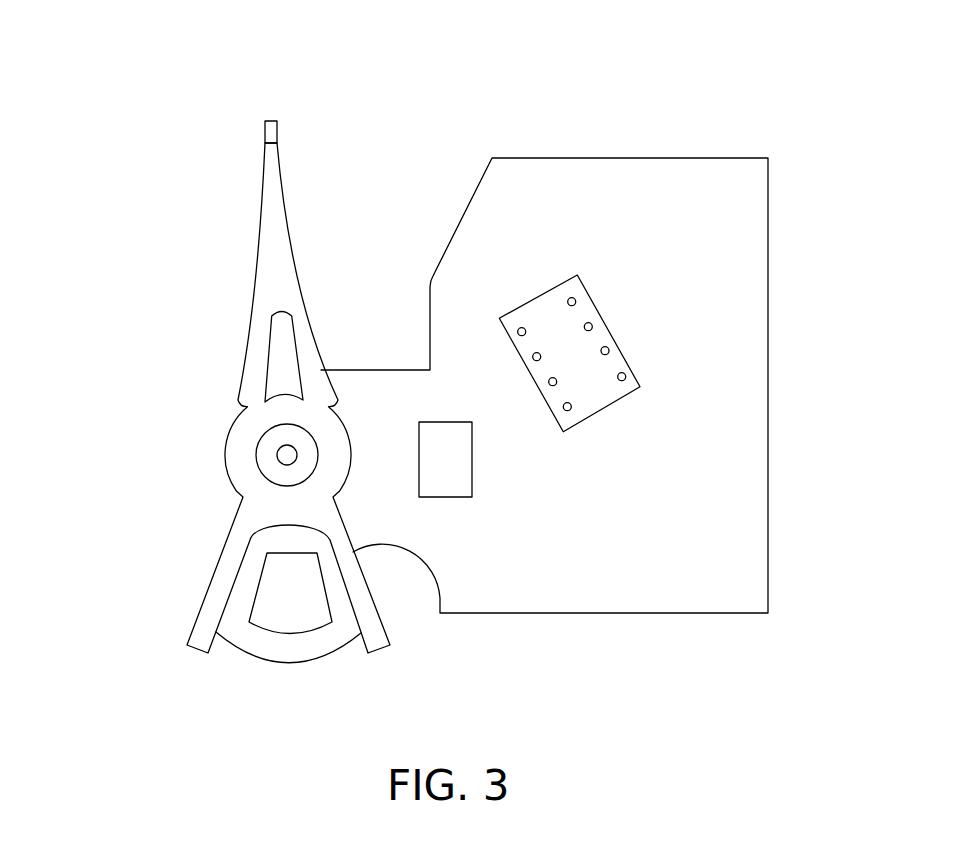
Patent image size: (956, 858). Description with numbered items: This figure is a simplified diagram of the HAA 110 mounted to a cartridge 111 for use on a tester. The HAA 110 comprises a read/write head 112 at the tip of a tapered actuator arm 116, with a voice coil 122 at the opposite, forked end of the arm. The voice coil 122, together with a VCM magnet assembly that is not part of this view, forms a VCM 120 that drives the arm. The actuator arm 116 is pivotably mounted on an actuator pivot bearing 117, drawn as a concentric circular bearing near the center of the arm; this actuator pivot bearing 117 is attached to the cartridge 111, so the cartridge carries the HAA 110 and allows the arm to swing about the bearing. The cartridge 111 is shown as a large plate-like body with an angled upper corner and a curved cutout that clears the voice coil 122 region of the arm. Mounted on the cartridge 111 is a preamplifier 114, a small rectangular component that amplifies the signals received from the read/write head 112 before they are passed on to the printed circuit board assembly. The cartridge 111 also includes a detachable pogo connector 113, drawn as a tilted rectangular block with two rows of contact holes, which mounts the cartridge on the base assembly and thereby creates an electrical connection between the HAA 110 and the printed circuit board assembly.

The HAA 110 is at (162, 149).
The cartridge 111 is at (546, 60).
The read/write head 112 is at (265, 128).
The pogo connector 113 is at (612, 332).
The preamplifier 114 is at (450, 422).
The actuator arm 116 is at (259, 243).
The actuator pivot bearing 117 is at (254, 452).
The VCM 120 is at (288, 647).
The voice coil 122 is at (327, 657).